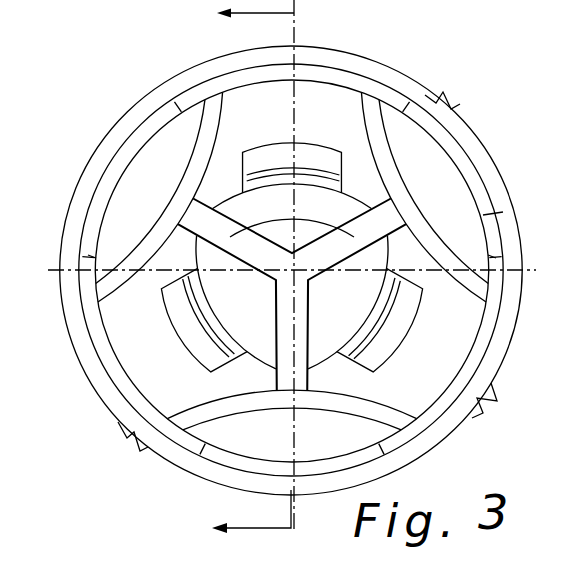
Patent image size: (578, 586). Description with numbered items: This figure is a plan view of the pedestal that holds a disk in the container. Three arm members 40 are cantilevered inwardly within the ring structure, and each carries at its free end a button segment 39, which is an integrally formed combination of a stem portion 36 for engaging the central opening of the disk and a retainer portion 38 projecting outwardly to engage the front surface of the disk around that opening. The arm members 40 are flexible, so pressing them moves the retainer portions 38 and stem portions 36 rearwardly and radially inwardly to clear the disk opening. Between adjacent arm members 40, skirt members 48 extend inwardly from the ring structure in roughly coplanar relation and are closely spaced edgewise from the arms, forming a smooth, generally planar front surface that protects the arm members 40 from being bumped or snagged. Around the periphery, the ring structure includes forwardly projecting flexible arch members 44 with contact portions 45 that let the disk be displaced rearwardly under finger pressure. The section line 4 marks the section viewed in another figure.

The section line 4- 4 is at (228, 279).
The stem portion 36 is at (248, 360).
The retainer portion 38 is at (246, 168).
The button segment 39 is at (296, 355).
The arm member 40 is at (352, 123).
The arch member 44 is at (97, 190).
The contact portion 45 is at (118, 158).
The skirt member 48 is at (162, 204).